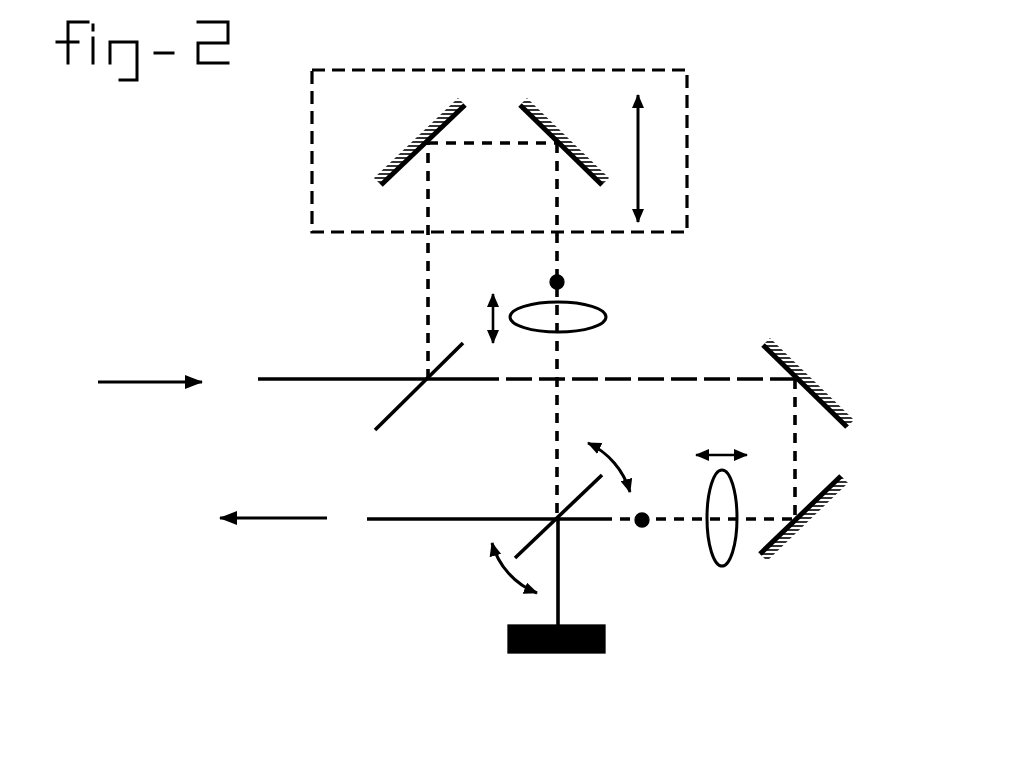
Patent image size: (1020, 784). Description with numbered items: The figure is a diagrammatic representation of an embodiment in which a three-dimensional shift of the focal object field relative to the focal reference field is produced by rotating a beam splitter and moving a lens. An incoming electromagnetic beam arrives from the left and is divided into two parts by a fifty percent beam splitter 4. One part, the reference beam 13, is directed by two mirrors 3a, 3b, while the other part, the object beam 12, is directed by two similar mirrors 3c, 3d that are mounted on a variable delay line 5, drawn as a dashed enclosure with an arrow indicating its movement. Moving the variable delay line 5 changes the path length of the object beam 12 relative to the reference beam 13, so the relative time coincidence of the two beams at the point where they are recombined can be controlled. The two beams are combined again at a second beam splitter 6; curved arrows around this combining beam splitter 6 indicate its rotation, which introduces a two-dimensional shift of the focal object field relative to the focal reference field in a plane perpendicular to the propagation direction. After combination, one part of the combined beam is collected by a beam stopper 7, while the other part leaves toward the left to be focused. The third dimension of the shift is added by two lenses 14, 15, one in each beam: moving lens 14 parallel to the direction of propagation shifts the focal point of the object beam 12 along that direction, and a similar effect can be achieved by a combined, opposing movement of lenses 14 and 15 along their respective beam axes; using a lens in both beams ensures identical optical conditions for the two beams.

The mirror 3a is at (808, 382).
The mirror 3b is at (804, 519).
The mirror 3c is at (419, 141).
The mirror 3d is at (565, 141).
The beam splitter 4 is at (406, 395).
The variable delay line 5 is at (499, 151).
The second beam splitter 6 is at (567, 518).
The beam stopper 7 is at (570, 640).
The object beam 12 is at (557, 282).
The reference beam 13 is at (642, 520).
The lens 14 is at (568, 318).
The lens 15 is at (721, 530).